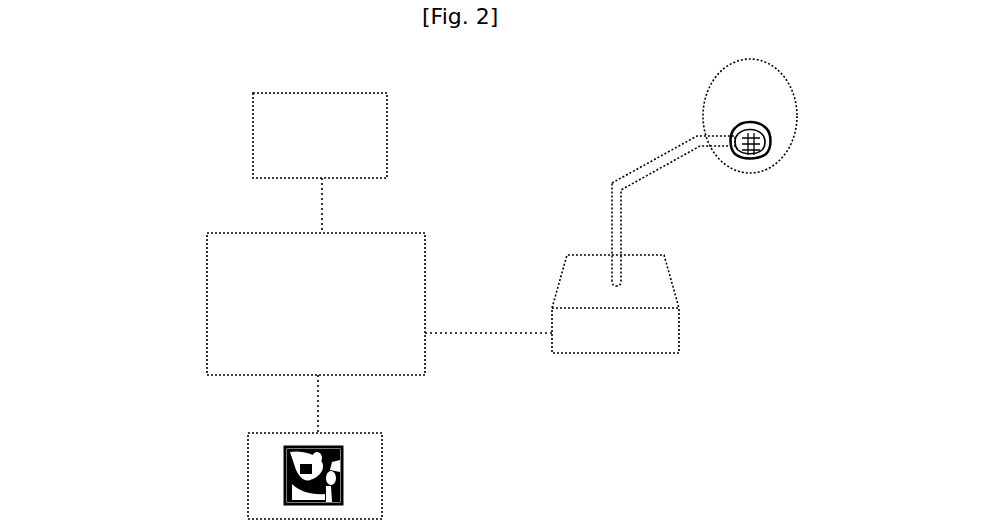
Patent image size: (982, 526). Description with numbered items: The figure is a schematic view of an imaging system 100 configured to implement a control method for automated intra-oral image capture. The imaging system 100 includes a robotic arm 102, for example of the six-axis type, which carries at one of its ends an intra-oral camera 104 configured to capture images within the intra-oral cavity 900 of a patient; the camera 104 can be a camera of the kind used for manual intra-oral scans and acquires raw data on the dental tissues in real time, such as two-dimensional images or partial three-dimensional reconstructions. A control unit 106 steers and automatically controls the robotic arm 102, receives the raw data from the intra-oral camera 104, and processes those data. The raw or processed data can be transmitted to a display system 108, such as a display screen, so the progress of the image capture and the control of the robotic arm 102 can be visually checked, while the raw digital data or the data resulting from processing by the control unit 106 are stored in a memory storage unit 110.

The imaging system 100 is at (150, 186).
The robotic arm 102 is at (627, 178).
The intra-oral camera 104 is at (728, 137).
The control unit 106 is at (216, 283).
The display system 108 is at (259, 480).
The memory storage unit 110 is at (261, 113).
The intra-oral cavity 900 is at (797, 111).